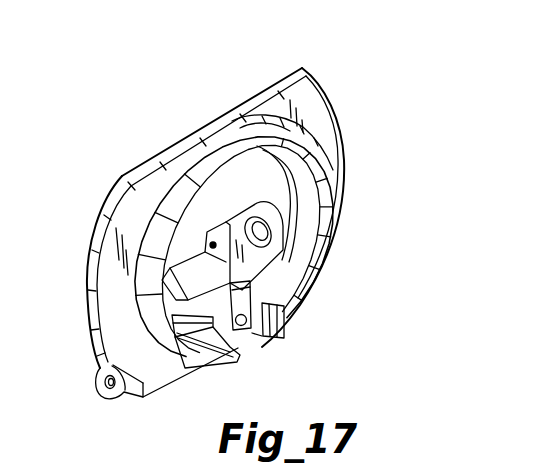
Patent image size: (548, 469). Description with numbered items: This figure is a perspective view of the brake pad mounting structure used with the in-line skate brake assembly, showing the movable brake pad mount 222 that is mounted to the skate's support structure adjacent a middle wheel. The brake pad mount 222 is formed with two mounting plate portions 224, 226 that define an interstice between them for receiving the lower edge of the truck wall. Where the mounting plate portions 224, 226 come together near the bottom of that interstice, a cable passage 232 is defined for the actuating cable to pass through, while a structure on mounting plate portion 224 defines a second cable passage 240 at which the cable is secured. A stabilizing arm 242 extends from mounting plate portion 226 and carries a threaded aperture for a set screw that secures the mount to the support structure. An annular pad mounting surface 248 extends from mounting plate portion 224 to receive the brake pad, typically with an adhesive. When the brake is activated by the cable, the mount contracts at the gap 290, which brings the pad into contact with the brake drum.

The brake pad mount 222 is at (312, 66).
The mounting plate portion 224 is at (327, 101).
The mounting plate portion 226 is at (186, 302).
The cable passage 232 is at (98, 391).
The second cable passage 240 is at (241, 327).
The stabilizing arm 242 is at (217, 240).
The annular pad mounting surface 248 is at (318, 238).
The gap 290 is at (257, 343).